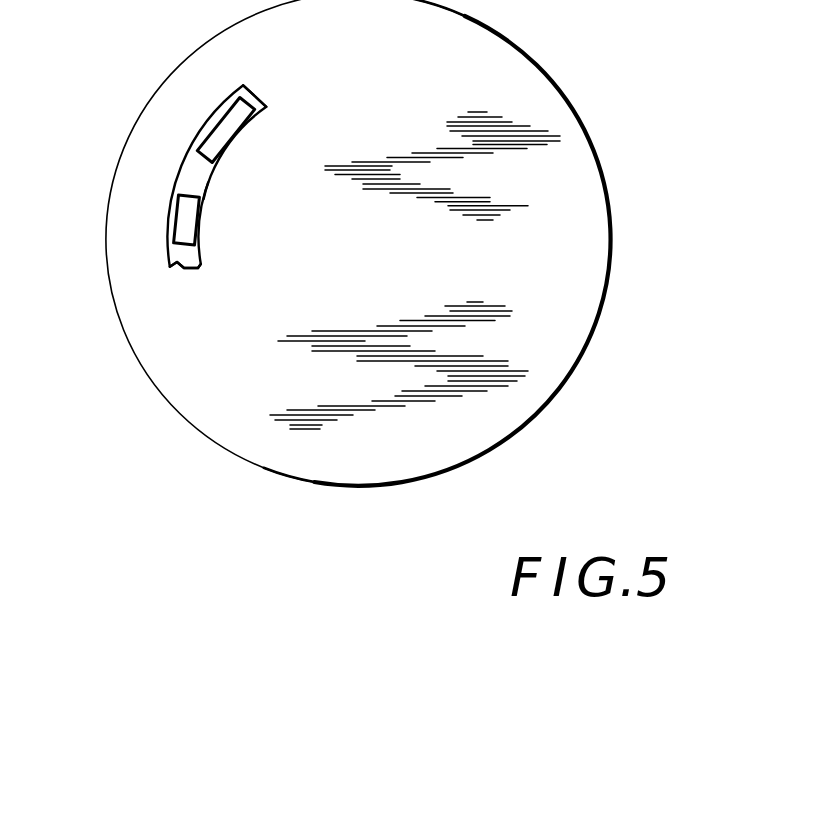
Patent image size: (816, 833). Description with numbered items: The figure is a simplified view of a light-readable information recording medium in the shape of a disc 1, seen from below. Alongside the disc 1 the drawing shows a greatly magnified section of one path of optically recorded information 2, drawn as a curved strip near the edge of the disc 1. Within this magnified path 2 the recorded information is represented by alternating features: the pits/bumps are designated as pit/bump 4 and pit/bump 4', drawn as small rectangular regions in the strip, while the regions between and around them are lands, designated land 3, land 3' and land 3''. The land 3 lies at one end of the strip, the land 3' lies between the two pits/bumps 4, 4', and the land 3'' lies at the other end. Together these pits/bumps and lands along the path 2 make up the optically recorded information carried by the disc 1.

The disc 1 is at (600, 168).
The path of optically recorded information 2 is at (175, 176).
The land 3 is at (287, 115).
The land 3' is at (239, 217).
The land 3'' is at (217, 286).
The pit/bump 4 is at (240, 146).
The pit/bump 4' is at (128, 223).